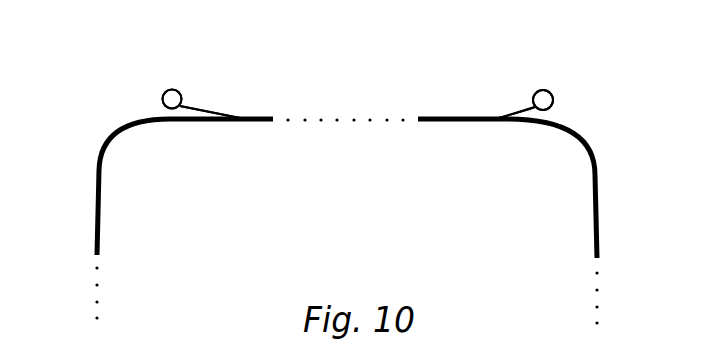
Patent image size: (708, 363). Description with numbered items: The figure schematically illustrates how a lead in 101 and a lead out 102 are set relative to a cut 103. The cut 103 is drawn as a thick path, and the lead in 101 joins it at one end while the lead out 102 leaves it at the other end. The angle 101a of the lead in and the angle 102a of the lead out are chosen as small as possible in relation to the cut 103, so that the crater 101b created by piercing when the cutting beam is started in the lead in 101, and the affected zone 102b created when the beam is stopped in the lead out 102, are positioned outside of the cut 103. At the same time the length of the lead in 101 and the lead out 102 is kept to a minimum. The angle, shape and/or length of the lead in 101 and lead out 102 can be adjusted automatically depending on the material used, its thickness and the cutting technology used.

The lead in 101 is at (187, 106).
The angle of the lead in 101a is at (195, 122).
The crater 101b is at (165, 93).
The lead out 102 is at (533, 103).
The angle of the lead out 102a is at (518, 123).
The affected zone 102b is at (555, 100).
The cut 103 is at (115, 133).